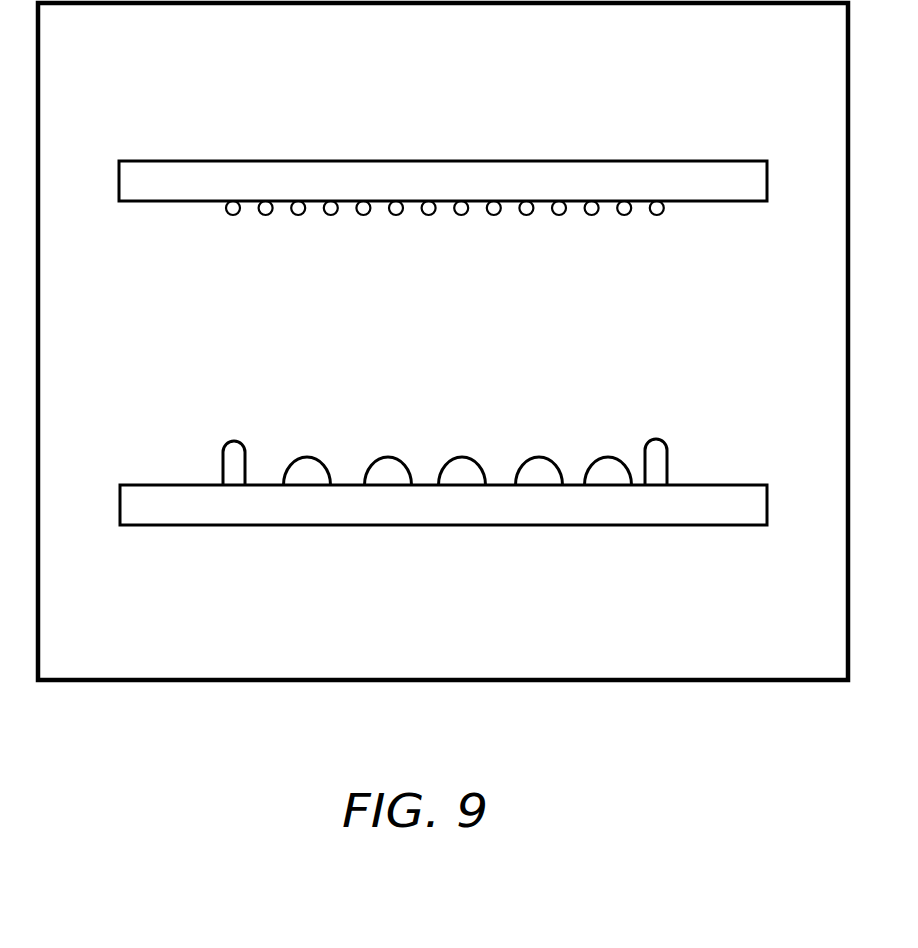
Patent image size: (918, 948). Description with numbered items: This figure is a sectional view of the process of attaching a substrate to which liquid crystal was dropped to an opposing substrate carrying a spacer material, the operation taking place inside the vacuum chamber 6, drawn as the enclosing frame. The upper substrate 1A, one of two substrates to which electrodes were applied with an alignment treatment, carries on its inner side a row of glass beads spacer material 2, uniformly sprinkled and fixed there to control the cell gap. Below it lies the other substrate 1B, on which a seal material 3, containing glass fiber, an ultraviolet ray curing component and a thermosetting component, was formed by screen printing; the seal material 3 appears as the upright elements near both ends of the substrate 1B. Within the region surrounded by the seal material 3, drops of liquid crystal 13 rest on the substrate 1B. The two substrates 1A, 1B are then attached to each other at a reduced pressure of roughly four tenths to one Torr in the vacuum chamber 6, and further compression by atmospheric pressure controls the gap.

The substrate 1A is at (427, 177).
The substrate 1B is at (480, 525).
The glass beads spacer material 2 is at (266, 216).
The seal material 3 is at (227, 458).
The liquid crystal 13 is at (313, 463).
The vacuum chamber 6 is at (311, 682).